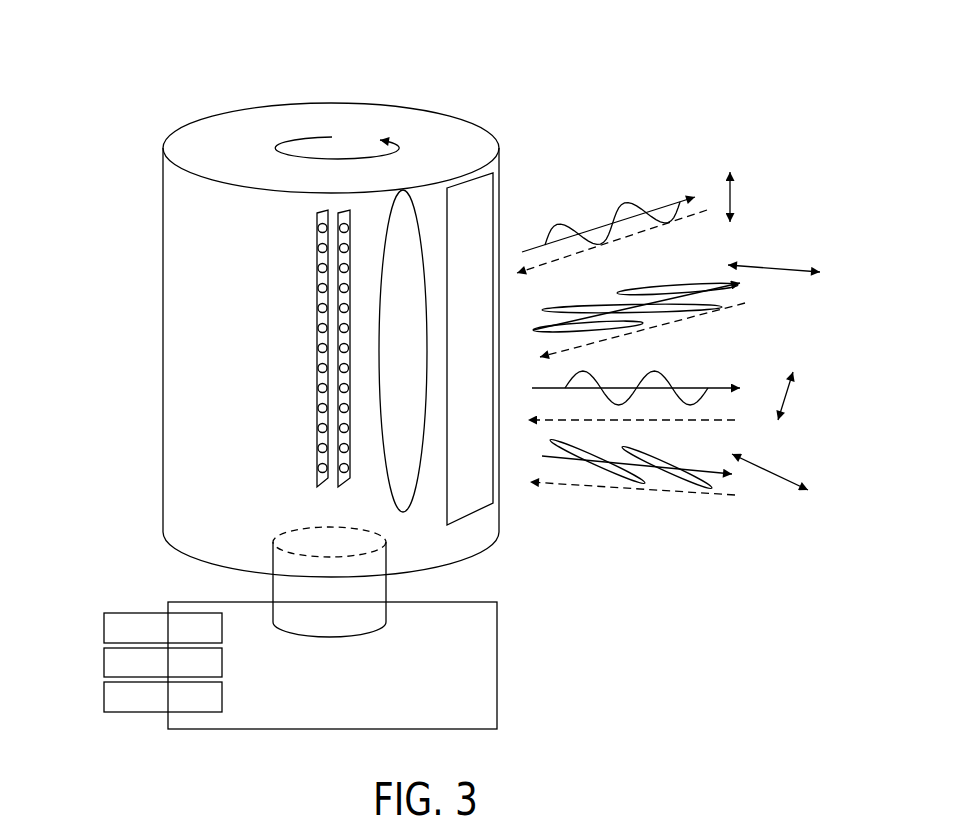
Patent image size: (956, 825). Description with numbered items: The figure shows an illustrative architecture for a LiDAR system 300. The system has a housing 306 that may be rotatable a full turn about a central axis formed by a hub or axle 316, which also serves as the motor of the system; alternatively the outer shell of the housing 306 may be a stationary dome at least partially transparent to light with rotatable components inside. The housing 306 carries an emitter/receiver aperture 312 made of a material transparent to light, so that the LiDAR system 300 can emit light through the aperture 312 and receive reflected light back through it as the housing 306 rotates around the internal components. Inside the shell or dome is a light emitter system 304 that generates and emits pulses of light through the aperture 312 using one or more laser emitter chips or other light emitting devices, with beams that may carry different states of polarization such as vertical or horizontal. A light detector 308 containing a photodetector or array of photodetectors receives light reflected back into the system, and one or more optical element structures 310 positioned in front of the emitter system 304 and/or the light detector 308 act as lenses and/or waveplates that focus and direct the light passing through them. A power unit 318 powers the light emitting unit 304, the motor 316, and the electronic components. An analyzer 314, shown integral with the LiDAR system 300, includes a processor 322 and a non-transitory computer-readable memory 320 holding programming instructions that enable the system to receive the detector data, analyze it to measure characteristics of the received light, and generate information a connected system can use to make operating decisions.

The LiDAR system 300 is at (243, 72).
The light emitter system 304 is at (343, 217).
The housing 306 is at (163, 197).
The light detector 308 is at (317, 218).
The optical element structure 310 is at (405, 197).
The emitter/receiver aperture 312 is at (473, 173).
The analyzer 314 is at (497, 662).
The hub or axle 316 is at (339, 623).
The power unit 318 is at (118, 629).
The non-transitory computer-readable memory 320 is at (118, 667).
The processor 322 is at (118, 700).